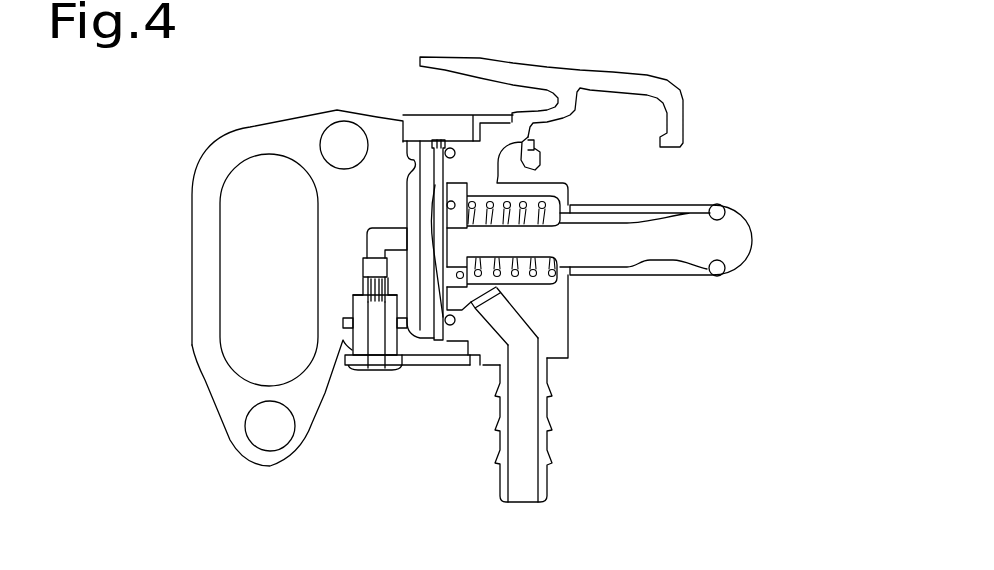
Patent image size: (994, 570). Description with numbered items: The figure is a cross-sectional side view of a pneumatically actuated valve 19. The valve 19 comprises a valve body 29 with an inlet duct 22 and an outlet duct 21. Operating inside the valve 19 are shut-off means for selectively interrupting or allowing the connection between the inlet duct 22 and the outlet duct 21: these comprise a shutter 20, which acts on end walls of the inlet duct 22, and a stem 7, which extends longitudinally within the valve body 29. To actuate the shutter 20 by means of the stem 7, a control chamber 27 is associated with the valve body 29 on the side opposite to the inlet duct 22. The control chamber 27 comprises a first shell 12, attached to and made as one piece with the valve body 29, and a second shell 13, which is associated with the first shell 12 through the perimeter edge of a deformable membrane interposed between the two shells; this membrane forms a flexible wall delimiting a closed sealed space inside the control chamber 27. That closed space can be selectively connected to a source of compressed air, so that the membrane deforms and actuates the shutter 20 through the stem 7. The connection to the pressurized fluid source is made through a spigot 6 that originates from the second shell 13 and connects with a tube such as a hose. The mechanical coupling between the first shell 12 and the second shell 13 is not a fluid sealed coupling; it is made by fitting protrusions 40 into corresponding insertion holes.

The pneumatically actuated valve 19 is at (160, 300).
The second shell 13 is at (379, 157).
The control chamber 27 is at (417, 203).
The inlet duct 22 is at (665, 221).
The shutter 20 is at (738, 247).
The stem 7 is at (652, 236).
The first shell 12 is at (557, 308).
The valve body 29 is at (553, 337).
The outlet duct 21 is at (530, 410).
The spigot 6 is at (378, 353).
The protrusions 40 is at (437, 361).